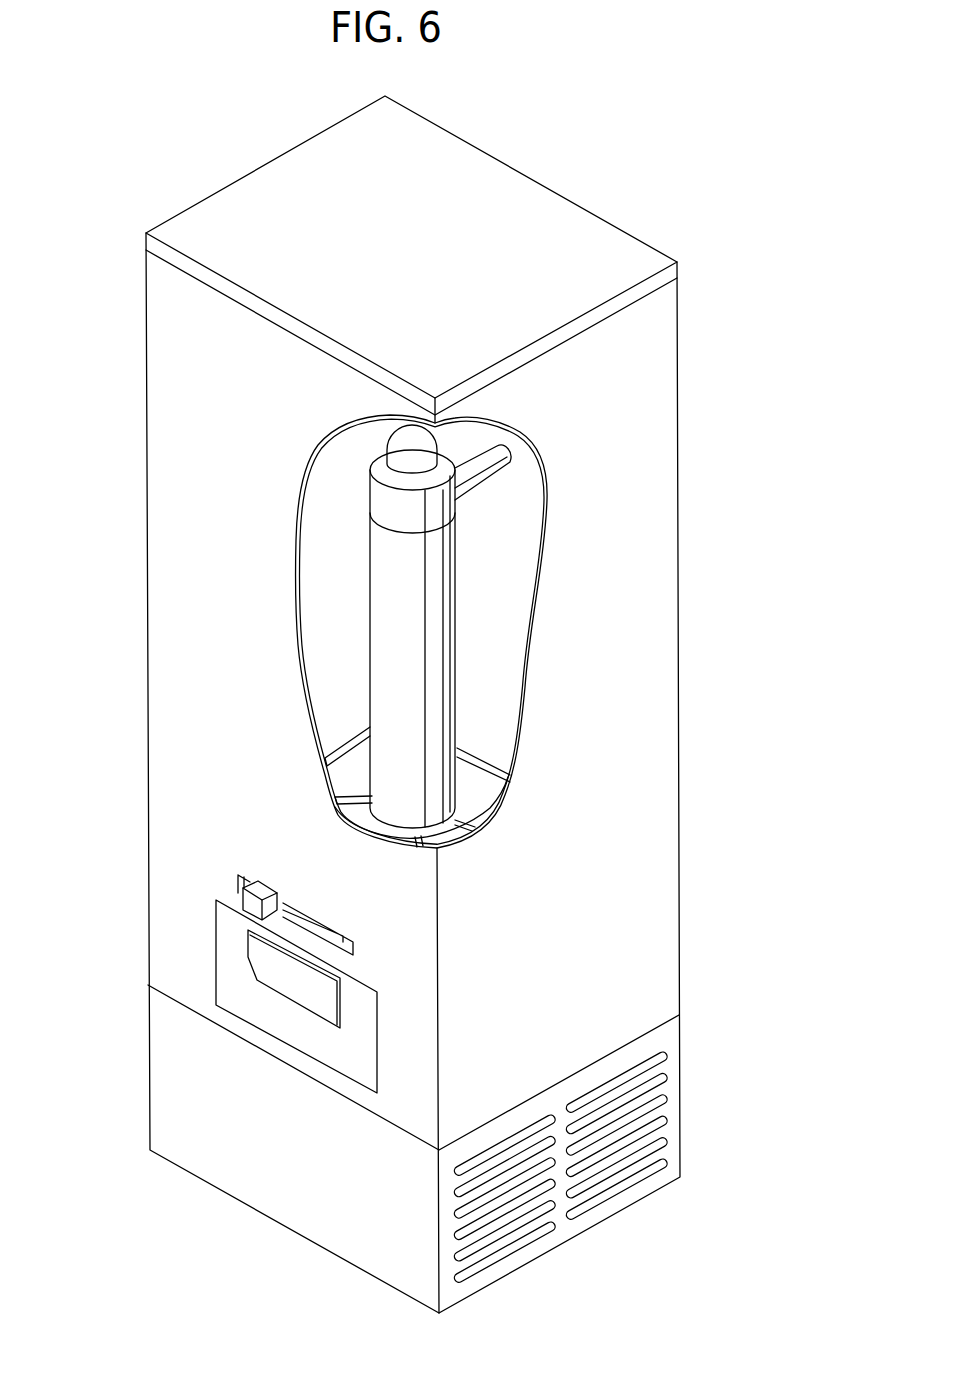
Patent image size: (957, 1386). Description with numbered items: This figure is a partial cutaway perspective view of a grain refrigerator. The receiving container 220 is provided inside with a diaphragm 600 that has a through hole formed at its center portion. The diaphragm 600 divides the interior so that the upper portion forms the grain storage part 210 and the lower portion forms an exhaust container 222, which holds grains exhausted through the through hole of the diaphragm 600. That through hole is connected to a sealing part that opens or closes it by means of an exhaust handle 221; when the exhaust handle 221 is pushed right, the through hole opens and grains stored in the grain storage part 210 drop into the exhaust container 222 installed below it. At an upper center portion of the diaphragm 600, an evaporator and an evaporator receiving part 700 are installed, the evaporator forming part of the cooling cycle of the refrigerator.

The receiving container 220 is at (660, 497).
The grain storage part 210 is at (327, 600).
The evaporator receiving part 700 is at (447, 648).
The diaphragm 600 is at (487, 767).
The exhaust handle 221 is at (240, 897).
The exhaust container 222 is at (222, 968).